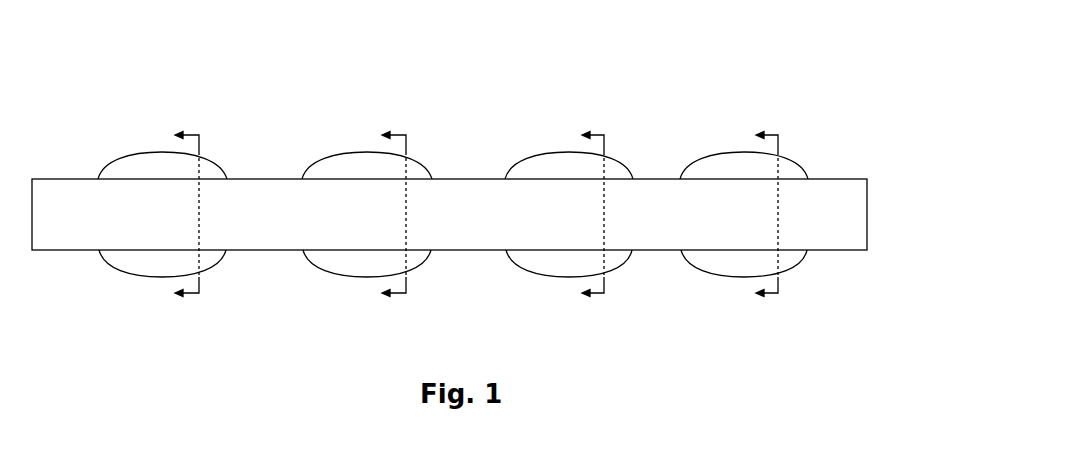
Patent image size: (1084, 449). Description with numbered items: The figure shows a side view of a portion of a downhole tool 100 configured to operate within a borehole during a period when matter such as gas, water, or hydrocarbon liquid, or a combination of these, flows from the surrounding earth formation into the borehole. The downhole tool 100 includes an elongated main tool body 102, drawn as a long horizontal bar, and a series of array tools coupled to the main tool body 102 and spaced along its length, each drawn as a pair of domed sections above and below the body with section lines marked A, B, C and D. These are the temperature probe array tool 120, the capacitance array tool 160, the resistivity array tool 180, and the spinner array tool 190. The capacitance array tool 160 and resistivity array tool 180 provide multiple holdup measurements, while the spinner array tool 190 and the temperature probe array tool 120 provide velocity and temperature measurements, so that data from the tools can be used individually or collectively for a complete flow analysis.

The downhole tool 100 is at (705, 50).
The main tool body 102 is at (465, 251).
The temperature probe array tool 120 is at (137, 145).
The capacitance array tool 160 is at (340, 145).
The resistivity array tool 180 is at (542, 145).
The spinner array tool 190 is at (708, 145).